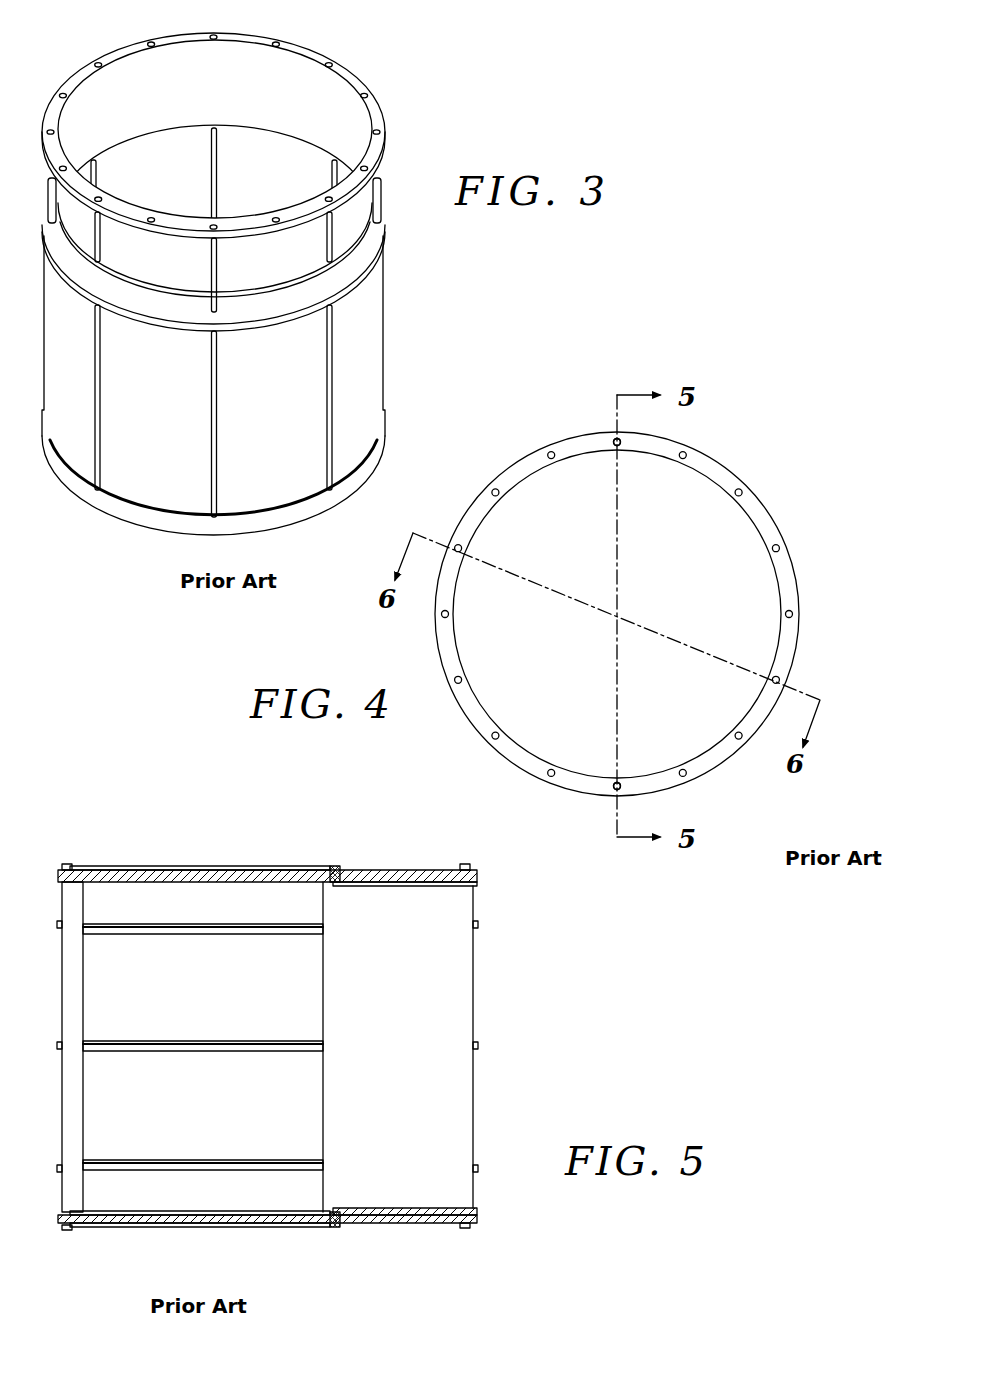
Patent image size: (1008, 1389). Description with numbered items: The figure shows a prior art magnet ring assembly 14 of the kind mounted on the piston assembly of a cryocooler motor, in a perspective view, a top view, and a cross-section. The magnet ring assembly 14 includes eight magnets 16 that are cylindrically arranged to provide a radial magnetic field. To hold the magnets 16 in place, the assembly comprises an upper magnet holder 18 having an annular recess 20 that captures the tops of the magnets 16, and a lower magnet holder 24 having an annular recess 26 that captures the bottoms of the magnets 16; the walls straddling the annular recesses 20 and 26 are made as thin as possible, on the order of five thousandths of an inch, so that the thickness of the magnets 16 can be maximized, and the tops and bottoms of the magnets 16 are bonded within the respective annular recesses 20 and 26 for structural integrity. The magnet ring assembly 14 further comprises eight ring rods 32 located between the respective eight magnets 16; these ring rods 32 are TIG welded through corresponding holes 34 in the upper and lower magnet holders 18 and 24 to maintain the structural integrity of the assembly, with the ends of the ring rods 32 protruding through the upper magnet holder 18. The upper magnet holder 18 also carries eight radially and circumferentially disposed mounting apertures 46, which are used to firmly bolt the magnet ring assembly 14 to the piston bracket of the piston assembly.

In FIG. 3, the magnet ring assembly 14 is at (388, 80).
In FIG. 4, the magnet ring assembly 14 is at (772, 470).
In FIG. 5, the magnet ring assembly 14 is at (216, 836).
In FIG. 3, the magnets 16 is at (307, 393).
In FIG. 5, the magnets 16 is at (115, 908).
In FIG. 3, the upper magnet holder 18 is at (376, 118).
In FIG. 4, the upper magnet holder 18 is at (525, 471).
In FIG. 5, the upper magnet holder 18 is at (338, 868).
In FIG. 5, the annular recess 20 is at (334, 1228).
In FIG. 3, the lower magnet holder 24 is at (120, 510).
In FIG. 5, the lower magnet holder 24 is at (60, 1228).
In FIG. 5, the annular recess 26 is at (80, 1228).
In FIG. 3, the ring rods 32 is at (211, 34).
In FIG. 4, the ring rods 32 is at (614, 441).
In FIG. 5, the ring rods 32 is at (360, 868).
In FIG. 3, the holes 34 is at (212, 42).
In FIG. 4, the holes 34 is at (619, 440).
In FIG. 5, the holes 34 is at (462, 866).
In FIG. 4, the mounting apertures 46 is at (773, 548).